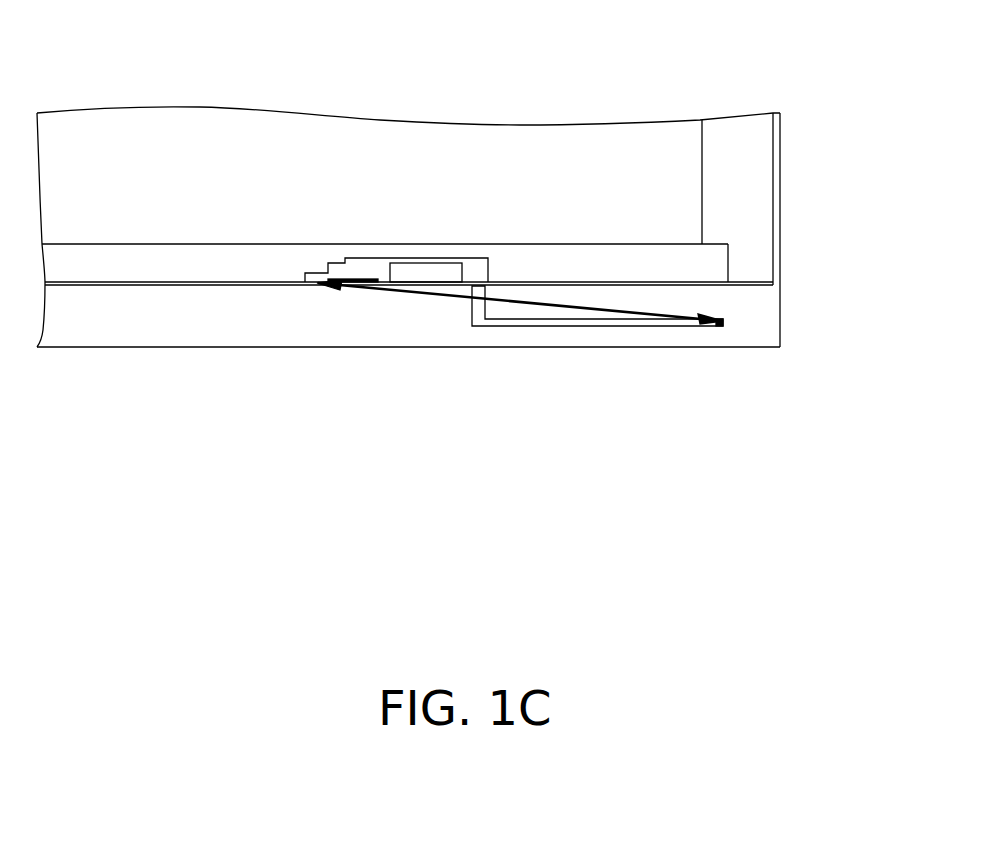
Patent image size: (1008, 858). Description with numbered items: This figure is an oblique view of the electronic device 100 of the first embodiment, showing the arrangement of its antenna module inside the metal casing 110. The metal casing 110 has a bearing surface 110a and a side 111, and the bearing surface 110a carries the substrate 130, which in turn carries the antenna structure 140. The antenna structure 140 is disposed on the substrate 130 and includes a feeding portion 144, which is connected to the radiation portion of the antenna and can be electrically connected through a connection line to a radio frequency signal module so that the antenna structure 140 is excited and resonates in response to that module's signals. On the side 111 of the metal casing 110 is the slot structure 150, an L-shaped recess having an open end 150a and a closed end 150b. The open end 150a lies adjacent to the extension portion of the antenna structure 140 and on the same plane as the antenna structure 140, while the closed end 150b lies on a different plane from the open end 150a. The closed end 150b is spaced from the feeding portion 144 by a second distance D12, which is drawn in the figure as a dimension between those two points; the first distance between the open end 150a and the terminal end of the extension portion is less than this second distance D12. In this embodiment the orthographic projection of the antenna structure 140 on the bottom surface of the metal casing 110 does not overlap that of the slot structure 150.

The electronic device 100 is at (463, 292).
The metal casing 110 is at (778, 167).
The bearing surface 110a is at (742, 135).
The side 111 is at (103, 325).
The substrate 130 is at (685, 273).
The antenna structure 140 is at (366, 270).
The feeding portion 144 is at (313, 283).
The slot structure 150 is at (479, 322).
The open end 150a is at (470, 285).
The closed end 150b is at (718, 327).
The second distance D12 is at (520, 307).